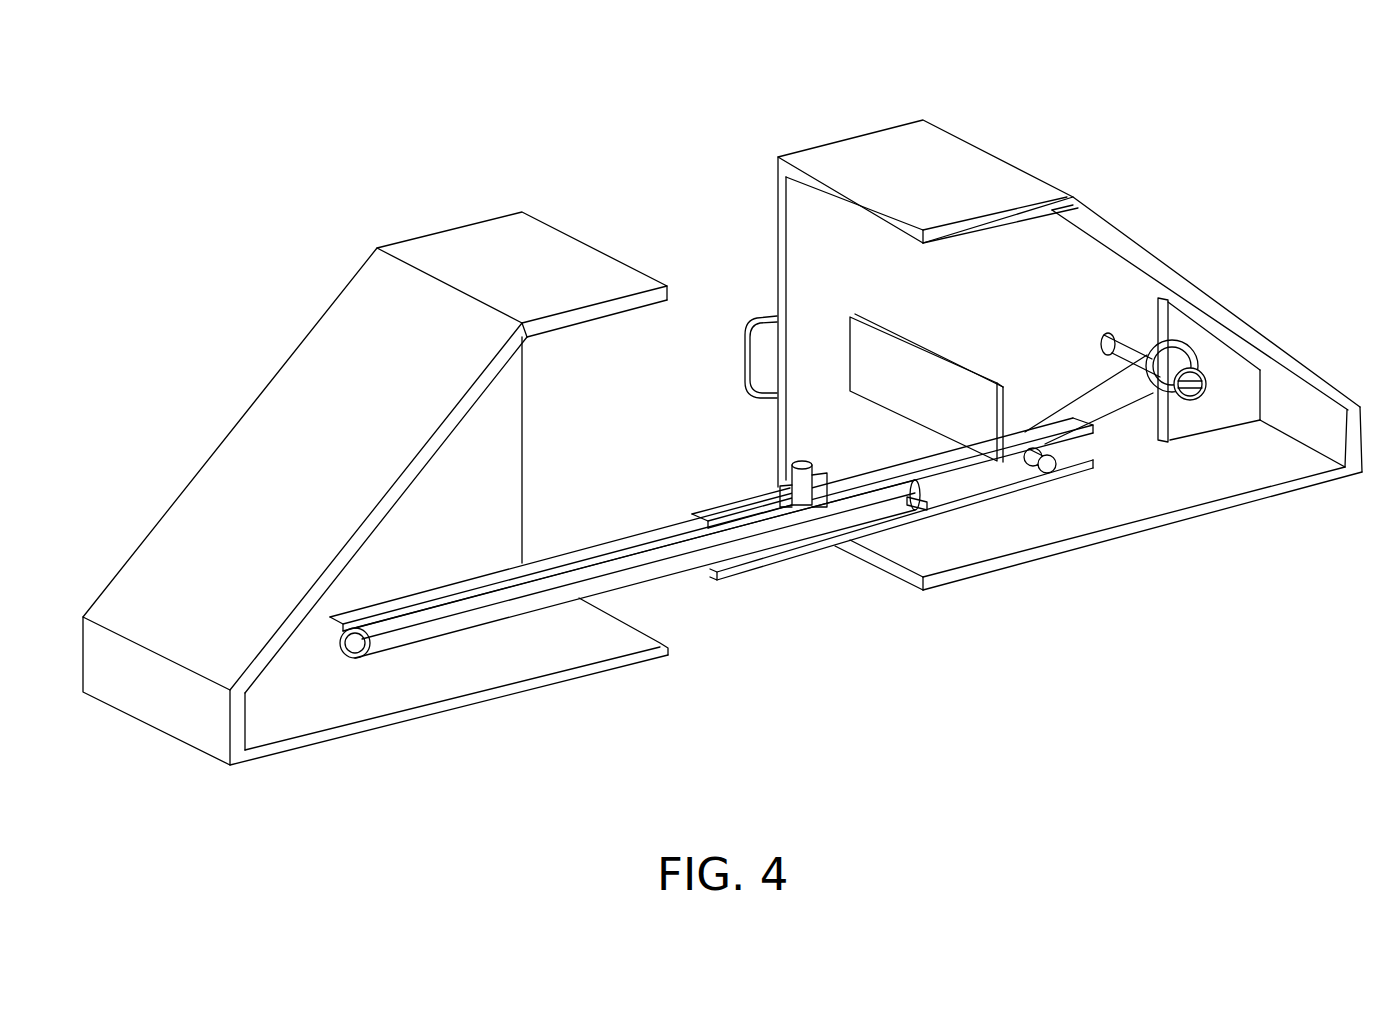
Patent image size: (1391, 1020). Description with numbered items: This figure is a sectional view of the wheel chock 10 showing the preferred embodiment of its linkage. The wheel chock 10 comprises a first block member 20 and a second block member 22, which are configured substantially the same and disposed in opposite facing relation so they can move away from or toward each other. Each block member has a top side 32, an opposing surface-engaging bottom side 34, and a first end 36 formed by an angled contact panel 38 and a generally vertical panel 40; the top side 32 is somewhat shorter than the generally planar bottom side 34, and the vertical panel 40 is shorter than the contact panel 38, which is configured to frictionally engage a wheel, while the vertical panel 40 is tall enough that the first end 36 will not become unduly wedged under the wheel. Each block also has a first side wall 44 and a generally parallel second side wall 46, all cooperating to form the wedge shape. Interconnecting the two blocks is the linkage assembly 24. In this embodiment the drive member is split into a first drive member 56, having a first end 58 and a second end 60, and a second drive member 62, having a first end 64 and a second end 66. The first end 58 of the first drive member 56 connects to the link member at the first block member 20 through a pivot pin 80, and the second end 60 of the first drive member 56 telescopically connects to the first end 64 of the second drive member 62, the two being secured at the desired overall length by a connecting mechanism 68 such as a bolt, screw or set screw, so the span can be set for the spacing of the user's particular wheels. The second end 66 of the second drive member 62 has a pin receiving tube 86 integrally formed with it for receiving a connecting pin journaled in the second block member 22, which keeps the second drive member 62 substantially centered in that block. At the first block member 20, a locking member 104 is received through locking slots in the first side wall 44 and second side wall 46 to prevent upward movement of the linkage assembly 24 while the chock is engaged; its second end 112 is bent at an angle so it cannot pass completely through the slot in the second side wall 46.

The wheel chock 10 is at (1256, 105).
The first block member 20 is at (1097, 203).
The second block member 22 is at (318, 350).
The linkage assembly 24 is at (708, 598).
The top side 32 is at (487, 228).
The bottom side 34 is at (258, 737).
The first end 36 is at (120, 560).
The angled contact panel 38 is at (228, 445).
The vertical panel 40 is at (183, 717).
The first side wall 44 is at (522, 407).
The second side wall 46 is at (795, 197).
The first drive member 56 is at (870, 470).
The first end 58 is at (1005, 498).
The second end 60 is at (680, 515).
The second drive member 62 is at (668, 560).
The first end 64 is at (832, 528).
The second end 66 is at (400, 664).
The connecting mechanism 68 is at (800, 462).
The pivot pin 80 is at (1050, 468).
The pin receiving tube 86 is at (323, 635).
The locking member 104 is at (857, 353).
The second end 112 is at (745, 357).